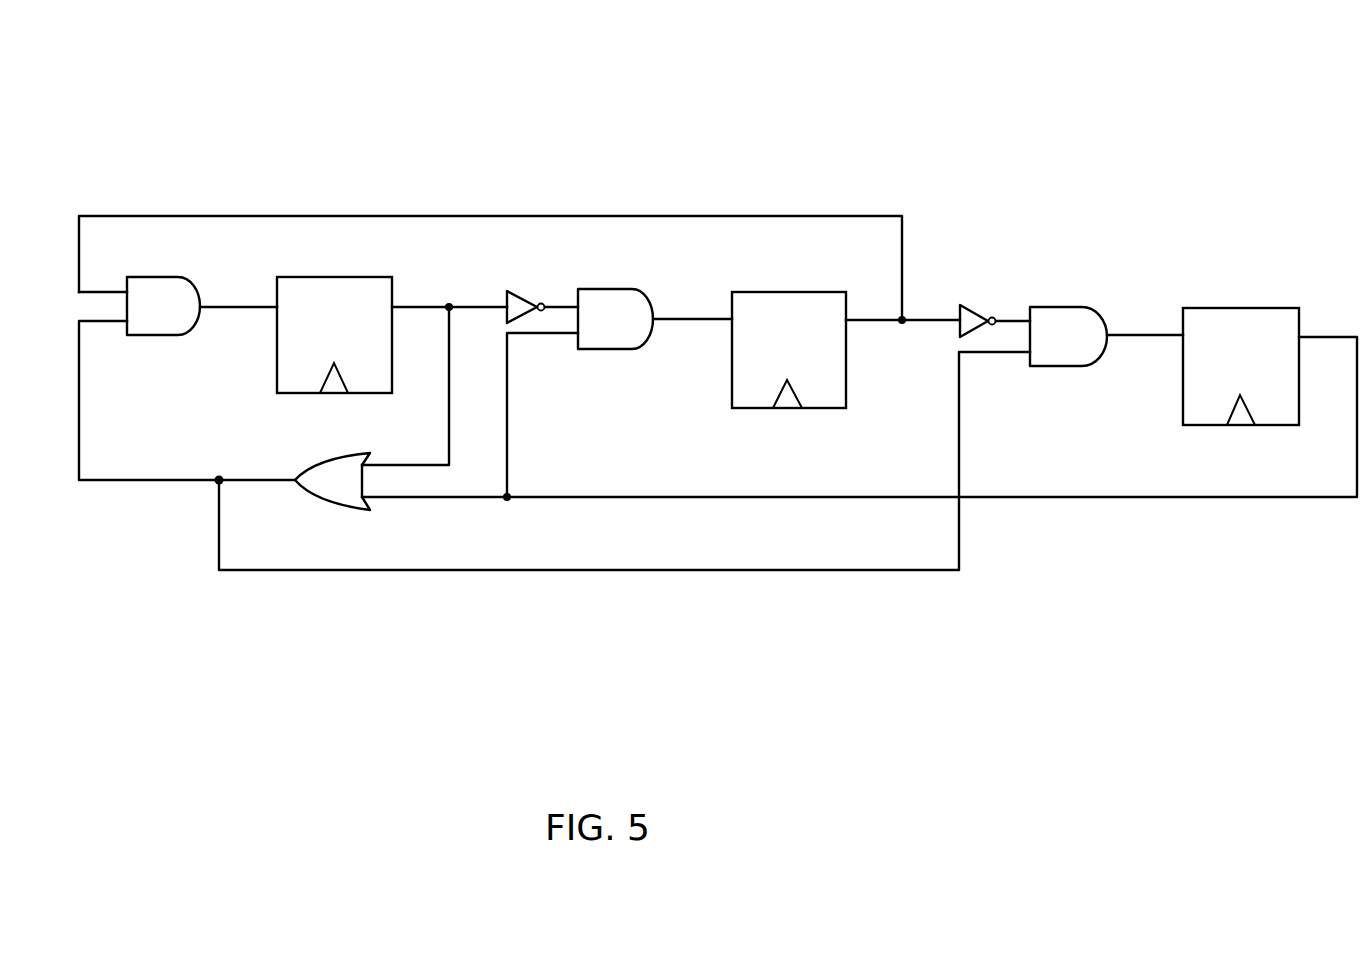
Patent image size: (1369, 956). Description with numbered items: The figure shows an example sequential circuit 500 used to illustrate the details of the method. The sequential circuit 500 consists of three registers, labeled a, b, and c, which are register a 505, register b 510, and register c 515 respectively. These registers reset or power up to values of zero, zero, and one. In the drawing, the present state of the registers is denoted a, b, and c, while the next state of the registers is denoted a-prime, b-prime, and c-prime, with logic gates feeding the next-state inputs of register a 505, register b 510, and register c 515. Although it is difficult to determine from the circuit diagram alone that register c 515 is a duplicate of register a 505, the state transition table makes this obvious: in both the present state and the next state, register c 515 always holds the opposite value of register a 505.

The sequential circuit 500 is at (776, 144).
The register a 505 is at (334, 335).
The register b 510 is at (789, 350).
The register c 515 is at (1241, 366).